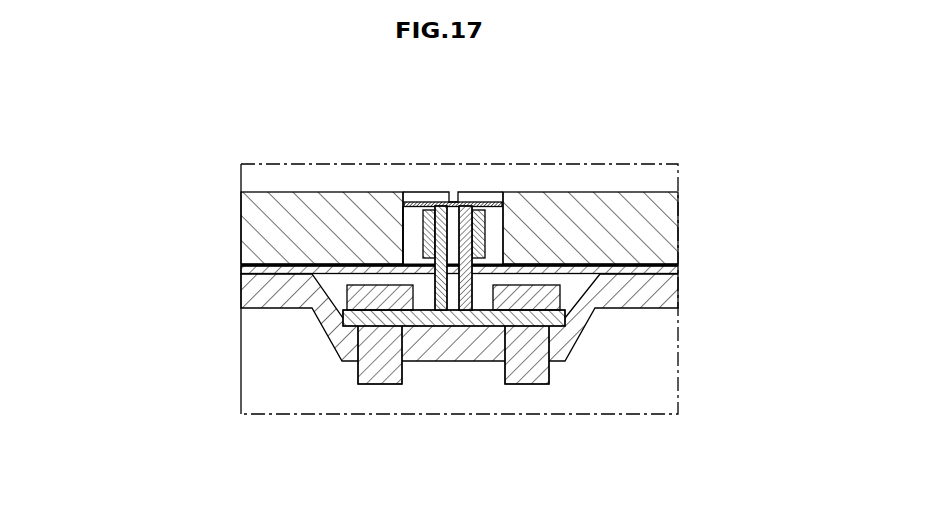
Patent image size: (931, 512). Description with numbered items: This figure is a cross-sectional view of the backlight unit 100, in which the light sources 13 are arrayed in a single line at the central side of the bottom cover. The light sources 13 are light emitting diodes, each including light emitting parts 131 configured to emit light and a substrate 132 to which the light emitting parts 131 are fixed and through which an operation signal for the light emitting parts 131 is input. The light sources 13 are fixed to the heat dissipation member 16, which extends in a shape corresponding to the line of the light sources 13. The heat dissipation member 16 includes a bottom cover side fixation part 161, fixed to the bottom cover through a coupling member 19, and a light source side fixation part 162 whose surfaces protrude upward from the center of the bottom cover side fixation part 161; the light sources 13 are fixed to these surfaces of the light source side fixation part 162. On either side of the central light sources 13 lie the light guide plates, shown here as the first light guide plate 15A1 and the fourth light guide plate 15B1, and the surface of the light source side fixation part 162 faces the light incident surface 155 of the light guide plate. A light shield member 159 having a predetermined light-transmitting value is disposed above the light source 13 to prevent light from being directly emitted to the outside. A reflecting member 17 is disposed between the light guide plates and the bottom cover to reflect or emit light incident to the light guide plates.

The backlight unit 100 is at (597, 85).
The first light guide plate 15A1 is at (357, 188).
The fourth light guide plate 15B1 is at (572, 200).
The light source 13 is at (428, 213).
The light emitting part 131 is at (440, 204).
The substrate 132 is at (446, 200).
The light shield member 159 is at (490, 202).
The reflecting member 17 is at (241, 267).
The light incident surface 155 is at (403, 231).
The coupling member 19 is at (373, 386).
The heat dissipation member 16 is at (495, 449).
The bottom cover side fixation part 161 is at (485, 327).
The light source side fixation part 162 is at (425, 327).